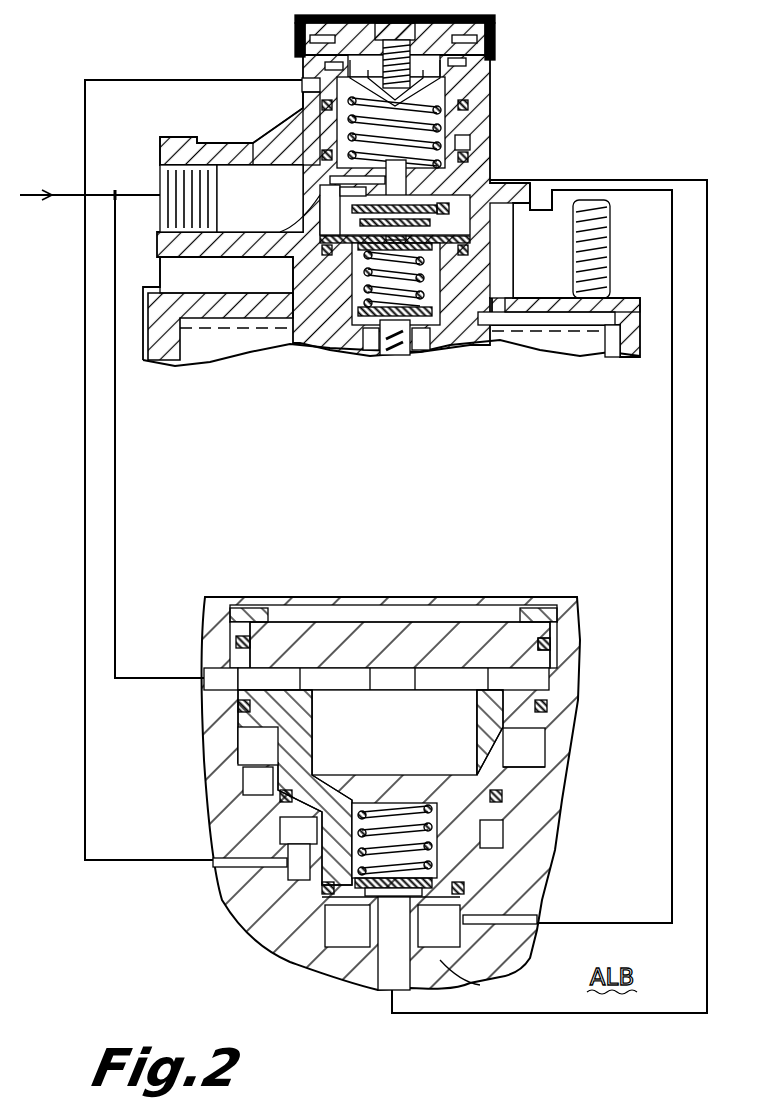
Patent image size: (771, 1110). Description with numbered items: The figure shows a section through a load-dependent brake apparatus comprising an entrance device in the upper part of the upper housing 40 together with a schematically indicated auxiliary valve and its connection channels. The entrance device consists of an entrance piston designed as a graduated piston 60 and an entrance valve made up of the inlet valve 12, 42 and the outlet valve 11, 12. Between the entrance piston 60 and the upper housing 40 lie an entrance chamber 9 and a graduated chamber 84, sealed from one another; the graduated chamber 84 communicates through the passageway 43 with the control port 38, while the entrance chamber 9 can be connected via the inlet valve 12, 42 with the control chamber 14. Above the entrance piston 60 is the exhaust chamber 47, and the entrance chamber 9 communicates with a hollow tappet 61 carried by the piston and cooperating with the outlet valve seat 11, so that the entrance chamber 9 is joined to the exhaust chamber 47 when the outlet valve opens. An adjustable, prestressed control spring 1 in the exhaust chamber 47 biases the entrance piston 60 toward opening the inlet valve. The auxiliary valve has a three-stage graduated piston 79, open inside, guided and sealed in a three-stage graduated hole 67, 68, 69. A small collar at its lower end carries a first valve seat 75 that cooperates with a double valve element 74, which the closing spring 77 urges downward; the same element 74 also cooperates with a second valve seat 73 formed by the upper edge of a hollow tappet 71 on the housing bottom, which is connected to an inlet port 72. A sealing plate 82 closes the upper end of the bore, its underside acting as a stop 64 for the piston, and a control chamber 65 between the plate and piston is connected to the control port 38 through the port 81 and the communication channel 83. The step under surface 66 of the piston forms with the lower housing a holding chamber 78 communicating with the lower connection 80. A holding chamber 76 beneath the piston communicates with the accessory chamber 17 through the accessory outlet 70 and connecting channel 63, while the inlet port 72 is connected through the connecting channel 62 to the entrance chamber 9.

The control spring 1 is at (440, 90).
The entrance chamber 9 is at (330, 180).
The outlet valve seat 11 is at (450, 208).
The entrance valve element 12 is at (352, 212).
The control chamber 14 is at (240, 244).
The accessory chamber 17 is at (546, 335).
The control port 38 is at (166, 218).
The upper housing 40 is at (190, 140).
The inlet valve seat 42 is at (340, 191).
The passageway 43 is at (291, 147).
The exhaust chamber 47 is at (465, 116).
The entrance piston 60 is at (470, 143).
The hollow tappet 61 is at (440, 162).
The connecting channel 62 is at (707, 557).
The connecting channel 63 is at (672, 494).
The stop 64 is at (520, 675).
The control chamber 65 is at (467, 708).
The under surface 66 is at (538, 731).
The graduated hole stage 67 is at (546, 756).
The graduated hole stage 68 is at (497, 834).
The graduated hole stage 69 is at (472, 964).
The accessory outlet 70 is at (531, 918).
The hollow tappet 71 is at (417, 912).
The inlet port 72 is at (388, 977).
The second valve seat 73 is at (378, 902).
The double valve element 74 is at (440, 866).
The first valve seat 75 is at (363, 898).
The holding chamber 76 is at (433, 942).
The closing spring 77 is at (372, 804).
The holding chamber 78 is at (252, 742).
The graduated piston 79 is at (260, 690).
The lower connection 80 is at (240, 782).
The port 81 is at (235, 672).
The sealing plate 82 is at (400, 632).
The communication channel 83 is at (115, 460).
The graduated chamber 84 is at (318, 122).